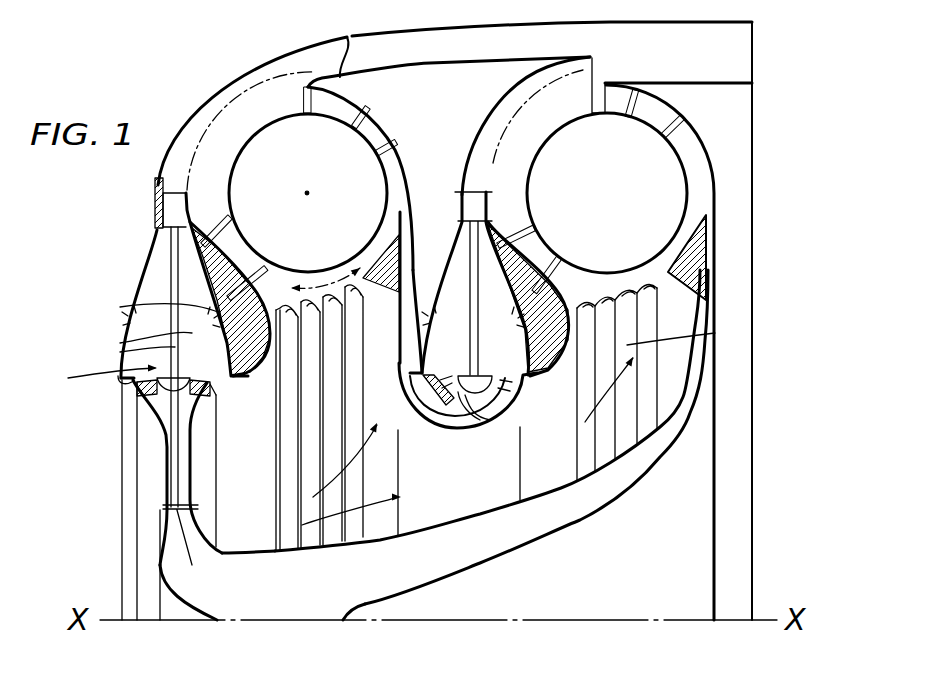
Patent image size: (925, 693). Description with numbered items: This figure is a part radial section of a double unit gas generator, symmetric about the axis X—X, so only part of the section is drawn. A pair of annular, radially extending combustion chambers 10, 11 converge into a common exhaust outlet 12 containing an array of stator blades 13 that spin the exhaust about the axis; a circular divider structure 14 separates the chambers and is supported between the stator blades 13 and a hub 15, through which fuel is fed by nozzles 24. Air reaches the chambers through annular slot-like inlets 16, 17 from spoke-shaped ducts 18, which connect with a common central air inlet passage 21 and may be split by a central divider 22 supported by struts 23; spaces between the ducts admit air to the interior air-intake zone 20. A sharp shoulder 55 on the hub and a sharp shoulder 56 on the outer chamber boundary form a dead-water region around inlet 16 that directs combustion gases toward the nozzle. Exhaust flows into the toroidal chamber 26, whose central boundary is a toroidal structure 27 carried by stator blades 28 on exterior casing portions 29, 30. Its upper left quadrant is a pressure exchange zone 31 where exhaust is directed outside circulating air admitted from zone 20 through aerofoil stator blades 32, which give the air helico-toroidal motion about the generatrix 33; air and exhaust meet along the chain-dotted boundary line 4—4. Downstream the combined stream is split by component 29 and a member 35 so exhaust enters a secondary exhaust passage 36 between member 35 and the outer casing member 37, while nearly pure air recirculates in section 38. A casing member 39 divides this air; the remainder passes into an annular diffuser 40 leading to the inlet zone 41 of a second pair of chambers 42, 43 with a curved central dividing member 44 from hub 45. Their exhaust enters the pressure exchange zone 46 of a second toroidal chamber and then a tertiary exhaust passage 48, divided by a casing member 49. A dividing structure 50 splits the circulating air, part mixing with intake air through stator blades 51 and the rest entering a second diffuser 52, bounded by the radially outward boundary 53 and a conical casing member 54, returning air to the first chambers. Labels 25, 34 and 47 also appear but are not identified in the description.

The boundary line 4— 4 is at (323, 275).
The combustion chamber 10 is at (150, 277).
The combustion chamber 11 is at (121, 335).
The common exhaust outlet 12 is at (163, 236).
The array of stator blades 13 is at (153, 211).
The circular divider structure 14 is at (121, 352).
The hub 15 is at (182, 378).
The air inlet 16 is at (128, 406).
The air inlet 17 is at (198, 405).
The spoke-shaped ducts 18 is at (192, 470).
The interior air-intake zone 20 is at (247, 537).
The common central air inlet passage 21 is at (312, 593).
The central divider 22 is at (163, 470).
The struts 23 is at (160, 509).
The nozzles 24 is at (207, 398).
The passage line 25 is at (122, 307).
The toroidal chamber 26 is at (289, 103).
The toroidal structure 27 is at (355, 270).
The stator blades 28 is at (232, 222).
The exterior casing portion 29 is at (383, 128).
The exterior casing portion 30 is at (213, 252).
The pressure exchange zone 31 is at (247, 97).
The stator blades 32 is at (313, 373).
The toroid generatrix 33 is at (307, 191).
The outer wall space 34 is at (217, 122).
The structural member 35 is at (343, 42).
The secondary exhaust passage 36 is at (467, 60).
The outer casing member 37 is at (385, 33).
The recirculation section 38 is at (378, 158).
The structural casing member 39 is at (380, 303).
The annular diffuser 40 is at (407, 267).
The inlet zone 41 is at (417, 400).
The combustion chamber 42 is at (460, 304).
The combustion chamber 43 is at (512, 304).
The central dividing member 44 is at (450, 425).
The hub 45 is at (478, 395).
The pressure exchange zone 46 is at (578, 103).
The right vortex tube 47 is at (690, 170).
The tertiary exhaust passage 48 is at (727, 47).
The casing member 49 is at (658, 91).
The dividing structure 50 is at (700, 245).
The array of stator blades 51 is at (603, 333).
The second diffuser 52 is at (700, 357).
The radially outward boundary 53 is at (565, 492).
The conically shaped casing member 54 is at (650, 470).
The sharp shoulder portion 55 is at (96, 381).
The sharp shoulder 56 is at (118, 380).